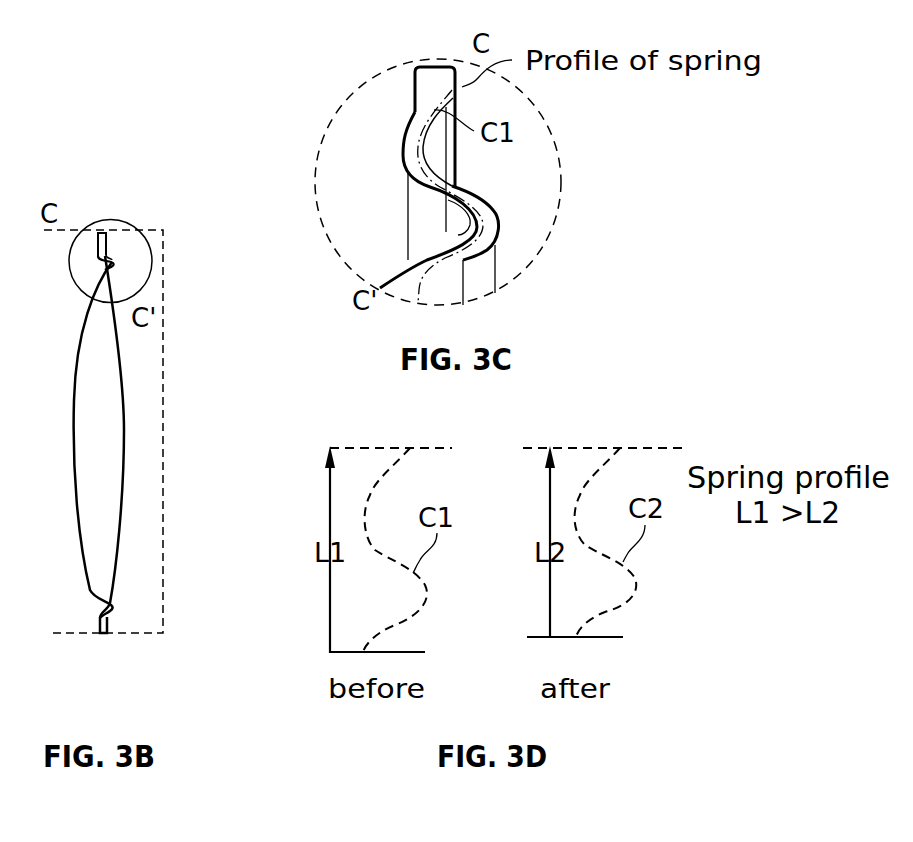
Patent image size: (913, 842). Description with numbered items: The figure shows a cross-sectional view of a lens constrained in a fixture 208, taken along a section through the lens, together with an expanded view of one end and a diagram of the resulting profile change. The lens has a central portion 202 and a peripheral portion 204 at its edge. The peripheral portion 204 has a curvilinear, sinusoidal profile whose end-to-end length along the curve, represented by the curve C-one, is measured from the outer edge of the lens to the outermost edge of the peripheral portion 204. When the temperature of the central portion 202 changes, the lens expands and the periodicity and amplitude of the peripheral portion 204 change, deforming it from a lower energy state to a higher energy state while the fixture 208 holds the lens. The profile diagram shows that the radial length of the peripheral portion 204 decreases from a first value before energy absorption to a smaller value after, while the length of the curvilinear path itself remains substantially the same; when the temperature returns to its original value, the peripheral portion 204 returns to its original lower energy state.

The central portion 202 is at (88, 370).
The peripheral portion 204 is at (112, 258).
The fixture 208 is at (148, 230).